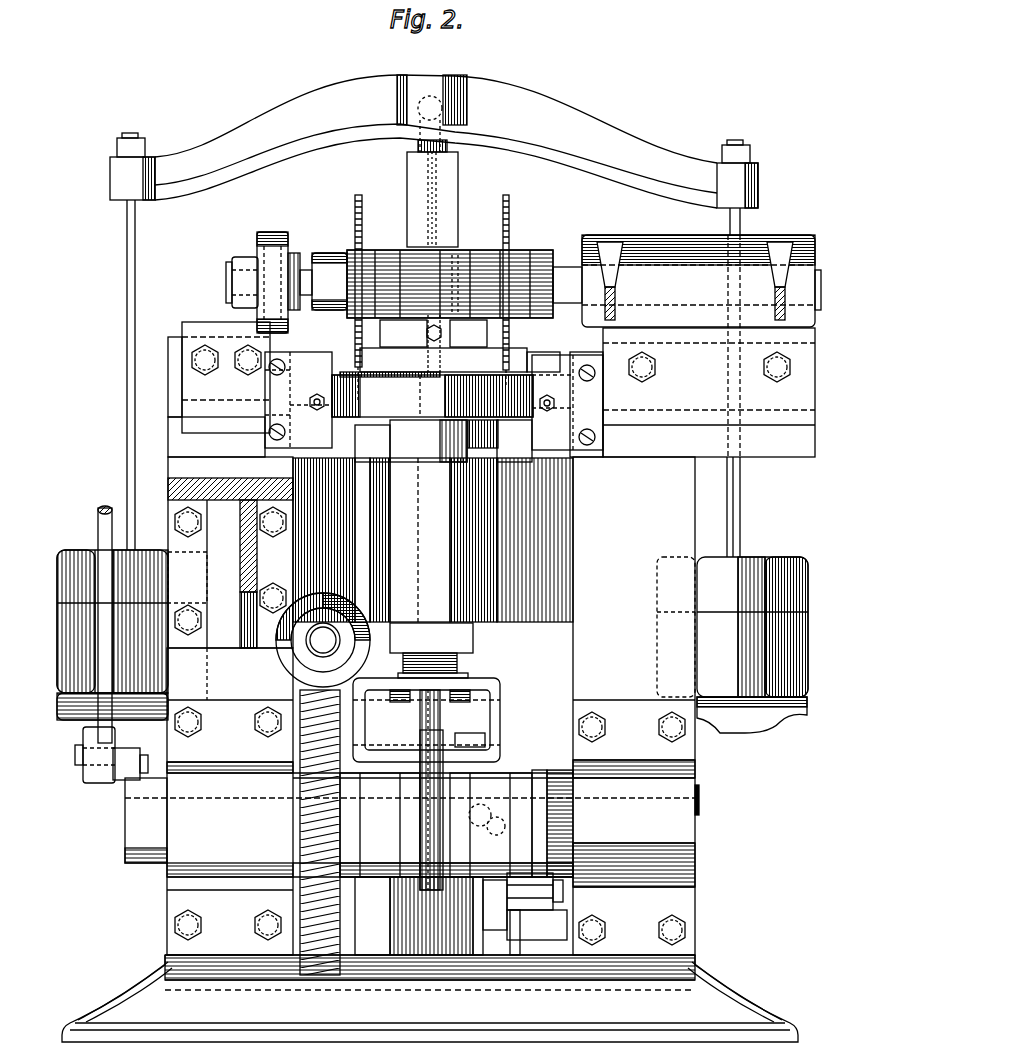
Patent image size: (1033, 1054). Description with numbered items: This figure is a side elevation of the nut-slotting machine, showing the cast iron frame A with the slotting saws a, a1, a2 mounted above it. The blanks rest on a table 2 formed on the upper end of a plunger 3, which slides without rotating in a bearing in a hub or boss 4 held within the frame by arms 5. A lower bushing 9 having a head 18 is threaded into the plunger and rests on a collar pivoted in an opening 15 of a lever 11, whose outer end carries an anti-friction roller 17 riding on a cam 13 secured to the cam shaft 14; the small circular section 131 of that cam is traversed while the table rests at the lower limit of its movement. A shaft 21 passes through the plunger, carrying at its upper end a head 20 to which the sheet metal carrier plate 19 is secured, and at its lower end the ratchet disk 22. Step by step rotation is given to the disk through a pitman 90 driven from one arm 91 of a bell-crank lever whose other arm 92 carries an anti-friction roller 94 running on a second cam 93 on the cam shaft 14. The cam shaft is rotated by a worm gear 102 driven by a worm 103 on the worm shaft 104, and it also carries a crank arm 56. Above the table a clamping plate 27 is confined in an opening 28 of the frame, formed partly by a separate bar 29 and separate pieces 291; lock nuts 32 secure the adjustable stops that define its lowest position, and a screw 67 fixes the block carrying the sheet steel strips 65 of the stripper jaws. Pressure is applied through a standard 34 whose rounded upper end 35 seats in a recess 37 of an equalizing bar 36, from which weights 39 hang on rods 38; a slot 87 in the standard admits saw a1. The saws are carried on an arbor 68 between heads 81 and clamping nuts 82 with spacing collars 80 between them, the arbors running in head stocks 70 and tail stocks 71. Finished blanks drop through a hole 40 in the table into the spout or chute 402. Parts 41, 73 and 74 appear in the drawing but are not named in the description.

The equalizing bar 36 is at (397, 88).
The recess 37 is at (430, 107).
The rounded upper end 35 is at (438, 100).
The standard 34 is at (452, 168).
The rods 38 is at (128, 318).
The slotting saw a is at (355, 204).
The slotting saw a1 is at (412, 212).
The slotting saw a2 is at (509, 204).
The arbor 68 is at (232, 280).
The tail stocks 71 is at (275, 232).
The clamping nuts 82 is at (330, 255).
The spacing collars 80 is at (410, 256).
The slot 87 is at (455, 262).
The heads 81 is at (548, 262).
The head stocks 70 is at (665, 229).
The bracket 73 is at (692, 392).
The bracket 74 is at (219, 389).
The opening 28 is at (290, 352).
The clamping plate 27 is at (325, 352).
The lock nuts 32 is at (310, 402).
The sheet steel strips 65 is at (423, 333).
The screw 67 is at (420, 343).
The table 2 is at (432, 394).
The sheet metal plate 19 is at (410, 385).
The head 20 is at (433, 396).
The hole 40 is at (437, 428).
The spout or chute 402 is at (440, 462).
The plunger 3 is at (392, 448).
The separate pieces 291 is at (322, 440).
The separate bar 29 is at (545, 435).
The arms 5 is at (323, 550).
The hub or boss 4 is at (403, 520).
The shaft 21 is at (418, 532).
The frame 41 is at (190, 482).
The frame A is at (83, 446).
The worm 103 is at (285, 655).
The worm shaft 104 is at (315, 645).
The weights 39 is at (70, 550).
The cam shaft 14 is at (698, 805).
The crank arm 56 is at (120, 790).
The worm gear 102 is at (300, 805).
The cam 13 is at (412, 693).
The small circular section 131 is at (425, 815).
The lower bushing 9 is at (460, 661).
The head 18 is at (468, 676).
The lever 11 is at (500, 690).
The anti-friction roller 17 is at (428, 683).
The hole or opening 15 is at (462, 738).
The pitman 90 is at (485, 803).
The arm of bell-crank lever 91 is at (525, 795).
The cam 93 is at (548, 795).
The disk 22 is at (432, 916).
The anti-friction roller 94 is at (563, 897).
The arm of bell-crank lever 92 is at (515, 930).